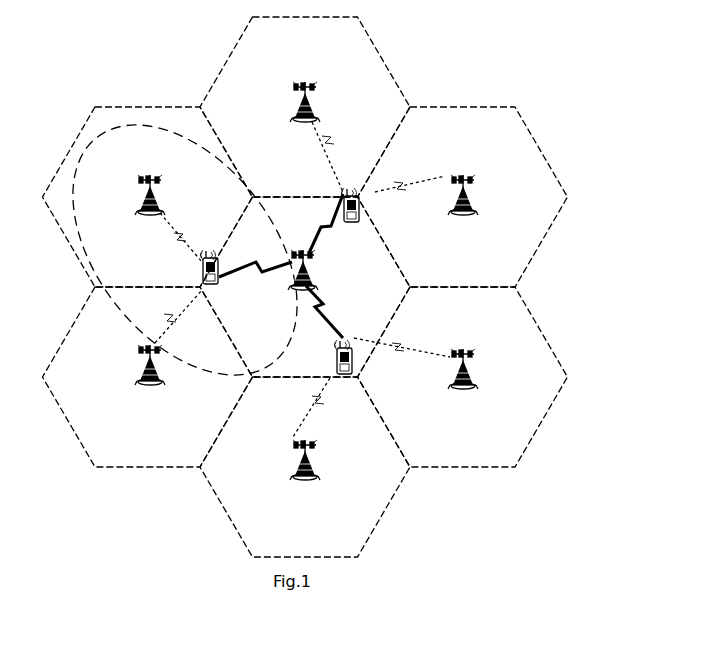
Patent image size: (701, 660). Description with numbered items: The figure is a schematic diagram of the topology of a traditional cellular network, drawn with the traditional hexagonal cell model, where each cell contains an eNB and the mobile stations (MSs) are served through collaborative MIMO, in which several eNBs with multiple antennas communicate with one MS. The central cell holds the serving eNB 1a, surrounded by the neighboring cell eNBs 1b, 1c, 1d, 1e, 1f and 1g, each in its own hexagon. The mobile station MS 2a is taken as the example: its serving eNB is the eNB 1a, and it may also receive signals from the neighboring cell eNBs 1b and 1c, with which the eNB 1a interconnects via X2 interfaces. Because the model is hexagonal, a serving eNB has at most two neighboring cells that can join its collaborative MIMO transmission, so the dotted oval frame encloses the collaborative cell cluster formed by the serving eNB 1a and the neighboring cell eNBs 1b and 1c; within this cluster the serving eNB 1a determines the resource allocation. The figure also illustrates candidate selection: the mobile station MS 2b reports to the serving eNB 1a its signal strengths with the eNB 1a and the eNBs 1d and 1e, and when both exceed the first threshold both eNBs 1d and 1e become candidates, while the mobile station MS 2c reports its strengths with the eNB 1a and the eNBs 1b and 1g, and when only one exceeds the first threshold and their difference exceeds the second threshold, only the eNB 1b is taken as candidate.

The serving eNB 1a is at (332, 294).
The neighboring cell eNB 1b is at (157, 383).
The neighboring cell eNB 1c is at (152, 192).
The neighboring cell eNB 1d is at (310, 110).
The neighboring cell eNB 1e is at (466, 193).
The eNB 1f (evolved Node B base station) 1f is at (462, 351).
The neighboring cell eNB 1g is at (307, 476).
The mobile station 2a is at (215, 264).
The mobile station 2b is at (360, 207).
The mobile station 2c is at (343, 350).